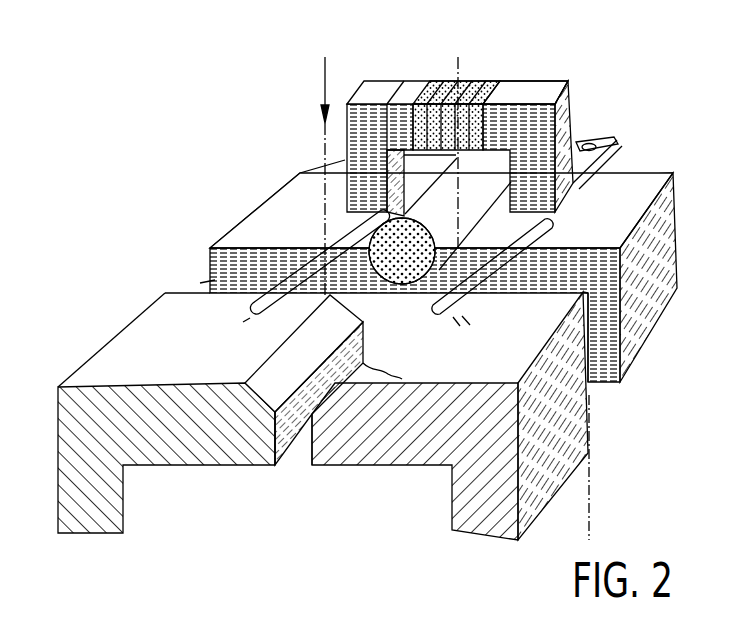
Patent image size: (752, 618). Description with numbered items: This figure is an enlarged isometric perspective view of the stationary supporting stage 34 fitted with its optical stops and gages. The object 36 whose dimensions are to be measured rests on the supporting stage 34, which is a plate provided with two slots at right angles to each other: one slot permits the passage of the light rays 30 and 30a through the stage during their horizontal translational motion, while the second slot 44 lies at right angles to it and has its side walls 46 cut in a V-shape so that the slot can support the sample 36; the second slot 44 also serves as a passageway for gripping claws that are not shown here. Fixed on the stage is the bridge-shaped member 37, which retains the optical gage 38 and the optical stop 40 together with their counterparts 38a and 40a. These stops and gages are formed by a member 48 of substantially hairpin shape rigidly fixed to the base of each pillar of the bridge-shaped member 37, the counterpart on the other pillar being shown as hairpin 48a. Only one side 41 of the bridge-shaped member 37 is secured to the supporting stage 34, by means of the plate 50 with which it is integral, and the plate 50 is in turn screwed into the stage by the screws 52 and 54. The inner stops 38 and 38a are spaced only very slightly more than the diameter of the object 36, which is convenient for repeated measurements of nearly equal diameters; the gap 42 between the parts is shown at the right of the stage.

The light ray 30 is at (458, 63).
The light ray 30a is at (325, 70).
The stationary supporting stage 34 is at (415, 478).
The object 36 is at (537, 90).
The bridge-shaped member 37 is at (490, 78).
The optical gage 38 is at (515, 224).
The optical gage counterpart 38a is at (265, 262).
The optical stop 40 is at (503, 287).
The optical stop counterpart 40a is at (200, 283).
The side of bridge-shaped member 41 is at (530, 95).
The gap 42 is at (597, 382).
The second slot 44 is at (297, 450).
The side walls 46 is at (272, 388).
The hairpin-shaped member 48 is at (434, 325).
The notch 48a is at (241, 323).
The plate 50 is at (673, 173).
The screw 52 is at (556, 178).
The screw 54 is at (583, 139).